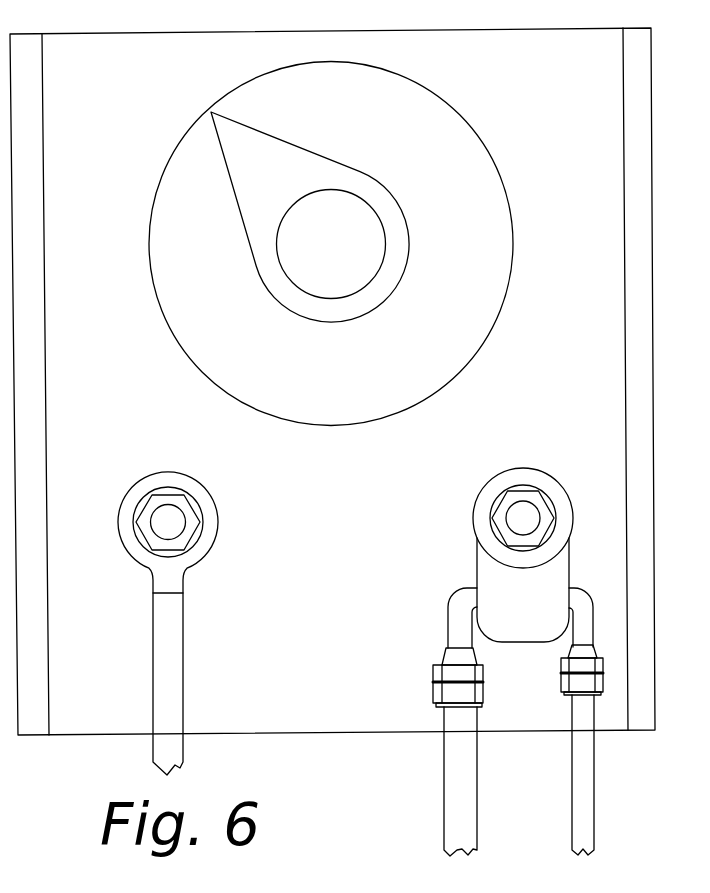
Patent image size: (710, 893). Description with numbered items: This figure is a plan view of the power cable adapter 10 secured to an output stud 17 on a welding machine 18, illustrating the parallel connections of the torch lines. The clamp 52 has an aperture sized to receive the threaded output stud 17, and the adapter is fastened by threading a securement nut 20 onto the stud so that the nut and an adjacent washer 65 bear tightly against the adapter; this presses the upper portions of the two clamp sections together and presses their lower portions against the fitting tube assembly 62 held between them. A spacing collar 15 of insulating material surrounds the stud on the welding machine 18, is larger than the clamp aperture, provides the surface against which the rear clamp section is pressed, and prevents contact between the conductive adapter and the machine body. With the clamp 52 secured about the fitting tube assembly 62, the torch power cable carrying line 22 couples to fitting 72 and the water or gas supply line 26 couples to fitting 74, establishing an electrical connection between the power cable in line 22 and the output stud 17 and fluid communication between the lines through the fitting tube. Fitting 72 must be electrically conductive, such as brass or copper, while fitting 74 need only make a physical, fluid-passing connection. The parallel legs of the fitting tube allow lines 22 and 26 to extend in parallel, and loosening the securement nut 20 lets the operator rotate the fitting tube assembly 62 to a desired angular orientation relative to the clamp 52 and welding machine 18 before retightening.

The adapter 10 is at (508, 464).
The spacing collar 15 is at (537, 468).
The output stud 17 is at (525, 518).
The welding machine 18 is at (651, 117).
The securement nut 20 is at (516, 490).
The torch power cable carrying line 22 is at (444, 797).
The water or gas supply line 26 is at (572, 797).
The clamp 52 is at (470, 565).
The fitting tube assembly 62 is at (448, 607).
The washer 65 is at (540, 488).
The fitting 72 is at (433, 693).
The fitting 74 is at (562, 685).